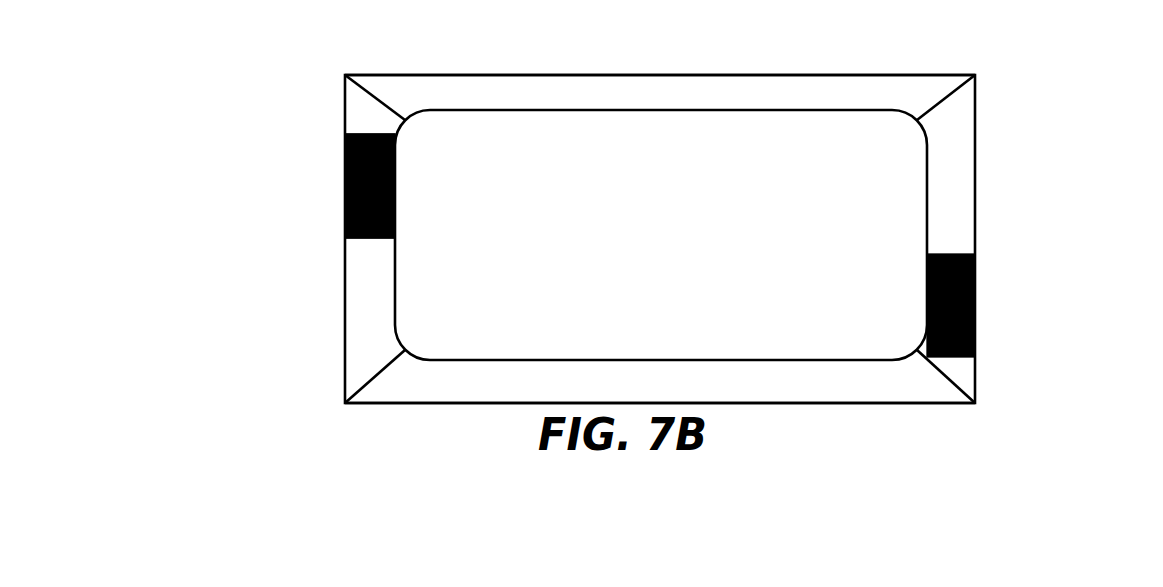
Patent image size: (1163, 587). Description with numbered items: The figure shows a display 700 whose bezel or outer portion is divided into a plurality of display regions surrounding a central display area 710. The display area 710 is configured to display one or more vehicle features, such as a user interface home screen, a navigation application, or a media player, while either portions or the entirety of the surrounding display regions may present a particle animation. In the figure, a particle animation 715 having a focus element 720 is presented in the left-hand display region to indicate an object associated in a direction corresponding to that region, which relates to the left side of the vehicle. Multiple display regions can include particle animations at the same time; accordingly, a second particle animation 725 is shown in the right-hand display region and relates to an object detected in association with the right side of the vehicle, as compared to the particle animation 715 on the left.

The display 700 is at (300, 72).
The display area 710 is at (902, 178).
The particle animation 715 is at (360, 203).
The focus element 720 is at (362, 173).
The particle animation 725 is at (977, 314).